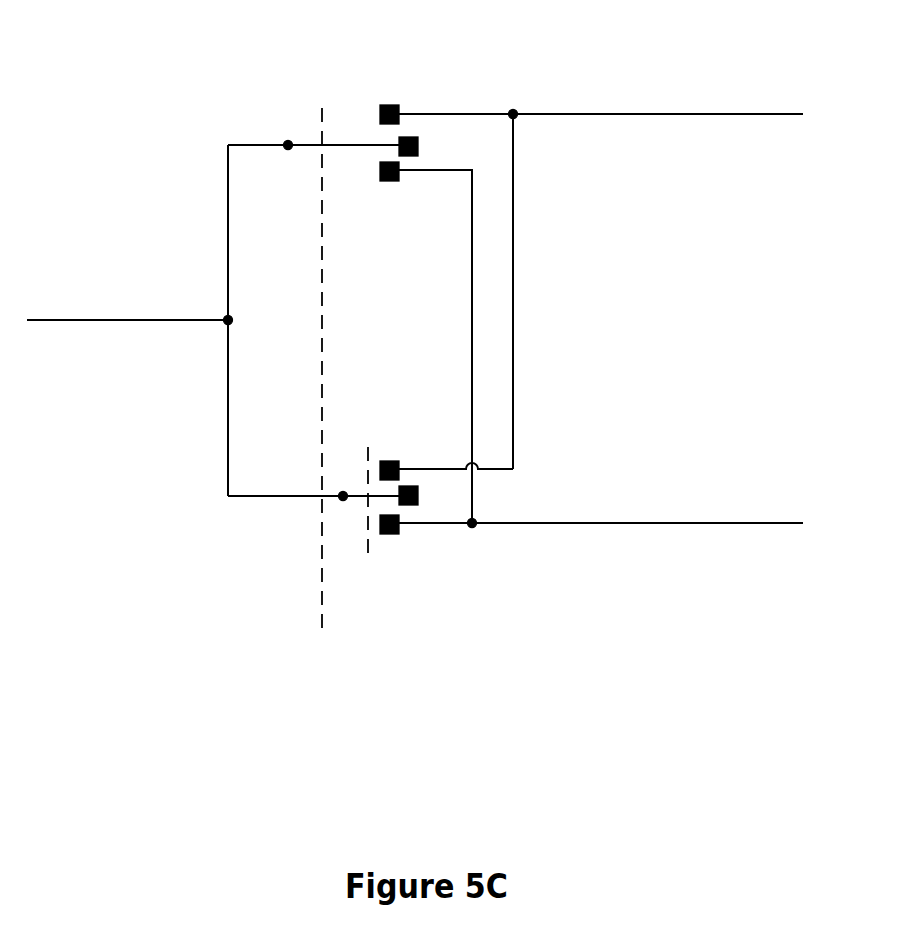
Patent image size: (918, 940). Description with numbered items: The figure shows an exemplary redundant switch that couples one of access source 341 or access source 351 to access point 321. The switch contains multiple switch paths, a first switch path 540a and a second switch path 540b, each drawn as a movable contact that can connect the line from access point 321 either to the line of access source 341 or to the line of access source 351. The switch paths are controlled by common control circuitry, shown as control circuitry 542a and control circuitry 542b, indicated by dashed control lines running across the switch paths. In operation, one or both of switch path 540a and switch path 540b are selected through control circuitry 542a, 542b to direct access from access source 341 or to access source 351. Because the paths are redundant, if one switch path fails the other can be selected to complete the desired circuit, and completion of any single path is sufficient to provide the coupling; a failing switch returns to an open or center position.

The access point 321 is at (70, 278).
The access source 341 is at (697, 83).
The access source 351 is at (695, 493).
The switch path 540a is at (305, 137).
The switch path 540b is at (352, 490).
The common control circuitry 542a is at (275, 677).
The common control circuitry 542b is at (449, 597).